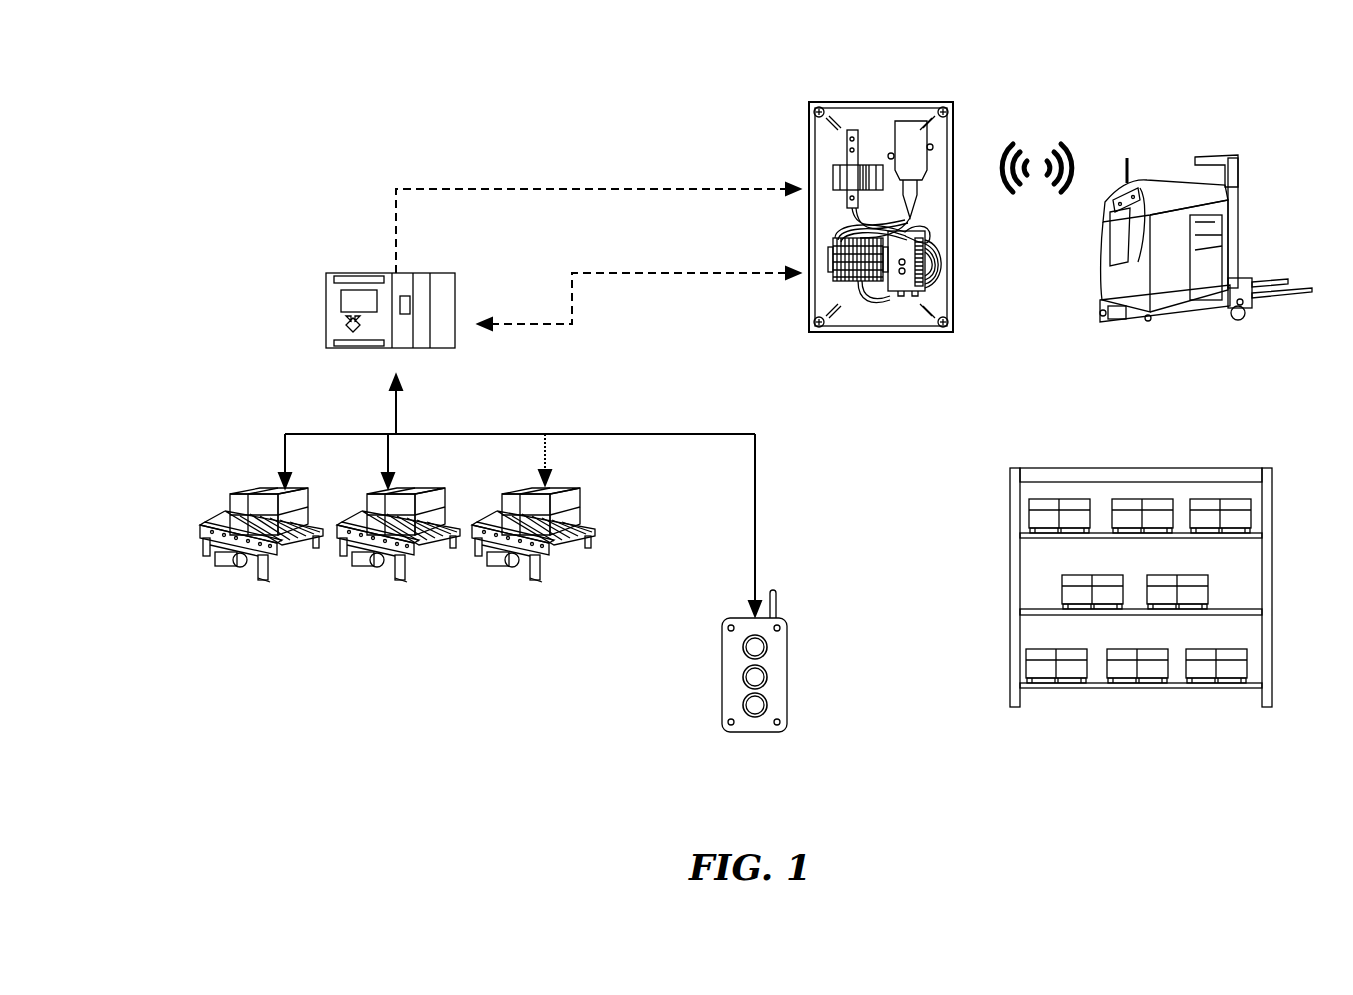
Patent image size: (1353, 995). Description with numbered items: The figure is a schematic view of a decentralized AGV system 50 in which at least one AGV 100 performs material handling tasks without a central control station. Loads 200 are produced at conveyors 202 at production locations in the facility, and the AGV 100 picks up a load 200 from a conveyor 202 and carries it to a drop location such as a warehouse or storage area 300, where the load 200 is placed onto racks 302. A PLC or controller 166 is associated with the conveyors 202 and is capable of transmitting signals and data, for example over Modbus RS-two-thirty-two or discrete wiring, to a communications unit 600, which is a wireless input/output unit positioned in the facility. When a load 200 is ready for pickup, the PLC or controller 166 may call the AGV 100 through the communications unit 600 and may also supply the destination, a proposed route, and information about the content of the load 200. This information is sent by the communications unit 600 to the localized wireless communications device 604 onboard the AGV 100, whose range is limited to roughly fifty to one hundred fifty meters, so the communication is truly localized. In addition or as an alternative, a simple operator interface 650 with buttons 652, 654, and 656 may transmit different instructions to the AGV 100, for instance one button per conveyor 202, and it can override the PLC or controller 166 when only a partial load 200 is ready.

The decentralized AGV system 50 is at (655, 441).
The PLC or controller 166 is at (318, 273).
The communications unit 600 is at (783, 618).
The AGV 100 is at (1245, 195).
The localized wireless communications device 604 is at (1127, 168).
The load 200 is at (230, 510).
The conveyor 202 is at (197, 537).
The storage area 300 is at (1169, 582).
The rack 302 is at (1273, 592).
The operator interface 650 is at (722, 663).
The button 652 is at (767, 643).
The button 654 is at (768, 675).
The button 656 is at (768, 705).